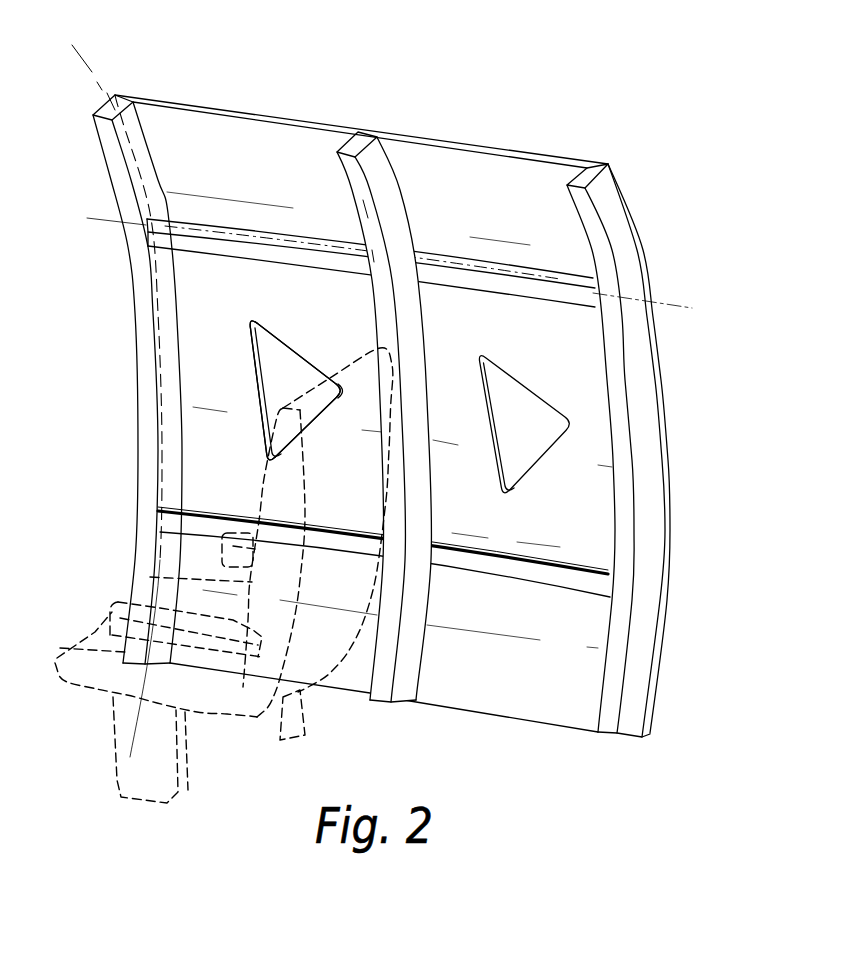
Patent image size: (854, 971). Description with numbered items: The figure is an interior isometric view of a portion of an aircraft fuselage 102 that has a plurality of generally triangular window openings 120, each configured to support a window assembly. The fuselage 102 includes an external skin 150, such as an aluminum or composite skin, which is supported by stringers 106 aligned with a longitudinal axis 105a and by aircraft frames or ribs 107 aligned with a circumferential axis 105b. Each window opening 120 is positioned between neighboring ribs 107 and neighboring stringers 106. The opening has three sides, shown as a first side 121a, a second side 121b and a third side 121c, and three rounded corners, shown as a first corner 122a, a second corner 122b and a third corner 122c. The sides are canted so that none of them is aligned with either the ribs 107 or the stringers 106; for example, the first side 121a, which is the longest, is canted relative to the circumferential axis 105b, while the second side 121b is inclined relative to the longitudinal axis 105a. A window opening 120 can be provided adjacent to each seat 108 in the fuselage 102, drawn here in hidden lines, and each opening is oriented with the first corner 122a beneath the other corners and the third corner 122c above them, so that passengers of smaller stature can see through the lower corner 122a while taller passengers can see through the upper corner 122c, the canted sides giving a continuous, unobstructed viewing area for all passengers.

The fuselage 102 is at (491, 130).
The longitudinal axis 105a is at (663, 300).
The circumferential axis 105b is at (87, 68).
The stringers 106 is at (212, 228).
The ribs 107 is at (127, 189).
The seat 108 is at (342, 665).
The window opening 120 is at (280, 362).
The first side 121a is at (256, 400).
The second side 121b is at (300, 340).
The third side 121c is at (316, 418).
The first corner 122a is at (267, 456).
The second corner 122b is at (342, 402).
The third corner 122c is at (256, 314).
The external skin 150 is at (300, 117).